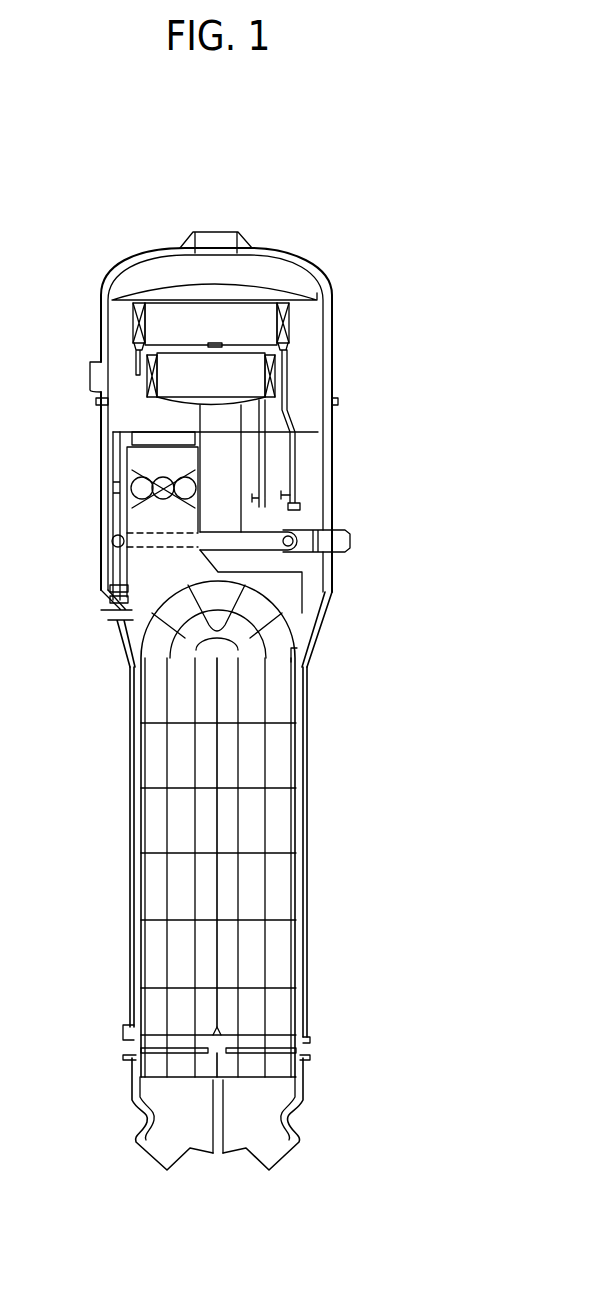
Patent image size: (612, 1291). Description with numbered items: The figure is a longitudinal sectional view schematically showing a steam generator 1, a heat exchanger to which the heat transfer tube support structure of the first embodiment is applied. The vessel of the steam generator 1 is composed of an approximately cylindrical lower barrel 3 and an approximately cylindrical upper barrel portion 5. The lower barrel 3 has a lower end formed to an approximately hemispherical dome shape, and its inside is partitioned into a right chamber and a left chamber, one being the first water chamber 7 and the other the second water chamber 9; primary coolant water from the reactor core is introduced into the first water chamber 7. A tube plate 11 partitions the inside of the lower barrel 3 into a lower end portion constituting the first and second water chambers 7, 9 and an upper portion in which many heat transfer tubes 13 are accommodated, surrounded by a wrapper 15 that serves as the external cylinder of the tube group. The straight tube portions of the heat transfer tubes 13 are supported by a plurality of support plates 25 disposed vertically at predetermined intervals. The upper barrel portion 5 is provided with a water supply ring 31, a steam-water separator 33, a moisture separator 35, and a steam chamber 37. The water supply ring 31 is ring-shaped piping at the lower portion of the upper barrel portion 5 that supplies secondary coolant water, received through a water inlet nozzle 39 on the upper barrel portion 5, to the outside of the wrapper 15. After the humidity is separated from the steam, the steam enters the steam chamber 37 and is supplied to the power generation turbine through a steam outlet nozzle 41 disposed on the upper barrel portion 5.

The steam generator 1 is at (372, 213).
The lower barrel 3 is at (392, 812).
The upper barrel portion 5 is at (388, 375).
The first water chamber 7 is at (268, 1107).
The second water chamber 9 is at (158, 1100).
The tube plate 11 is at (280, 1067).
The heat transfer tubes 13 is at (268, 890).
The wrapper 15 is at (297, 753).
The support plates 25 is at (157, 722).
The water supply ring 31 is at (262, 532).
The steam-water separator 33 is at (130, 473).
The moisture separator 35 is at (298, 338).
The steam chamber 37 is at (290, 270).
The water inlet nozzle 39 is at (353, 540).
The steam outlet nozzle 41 is at (213, 230).